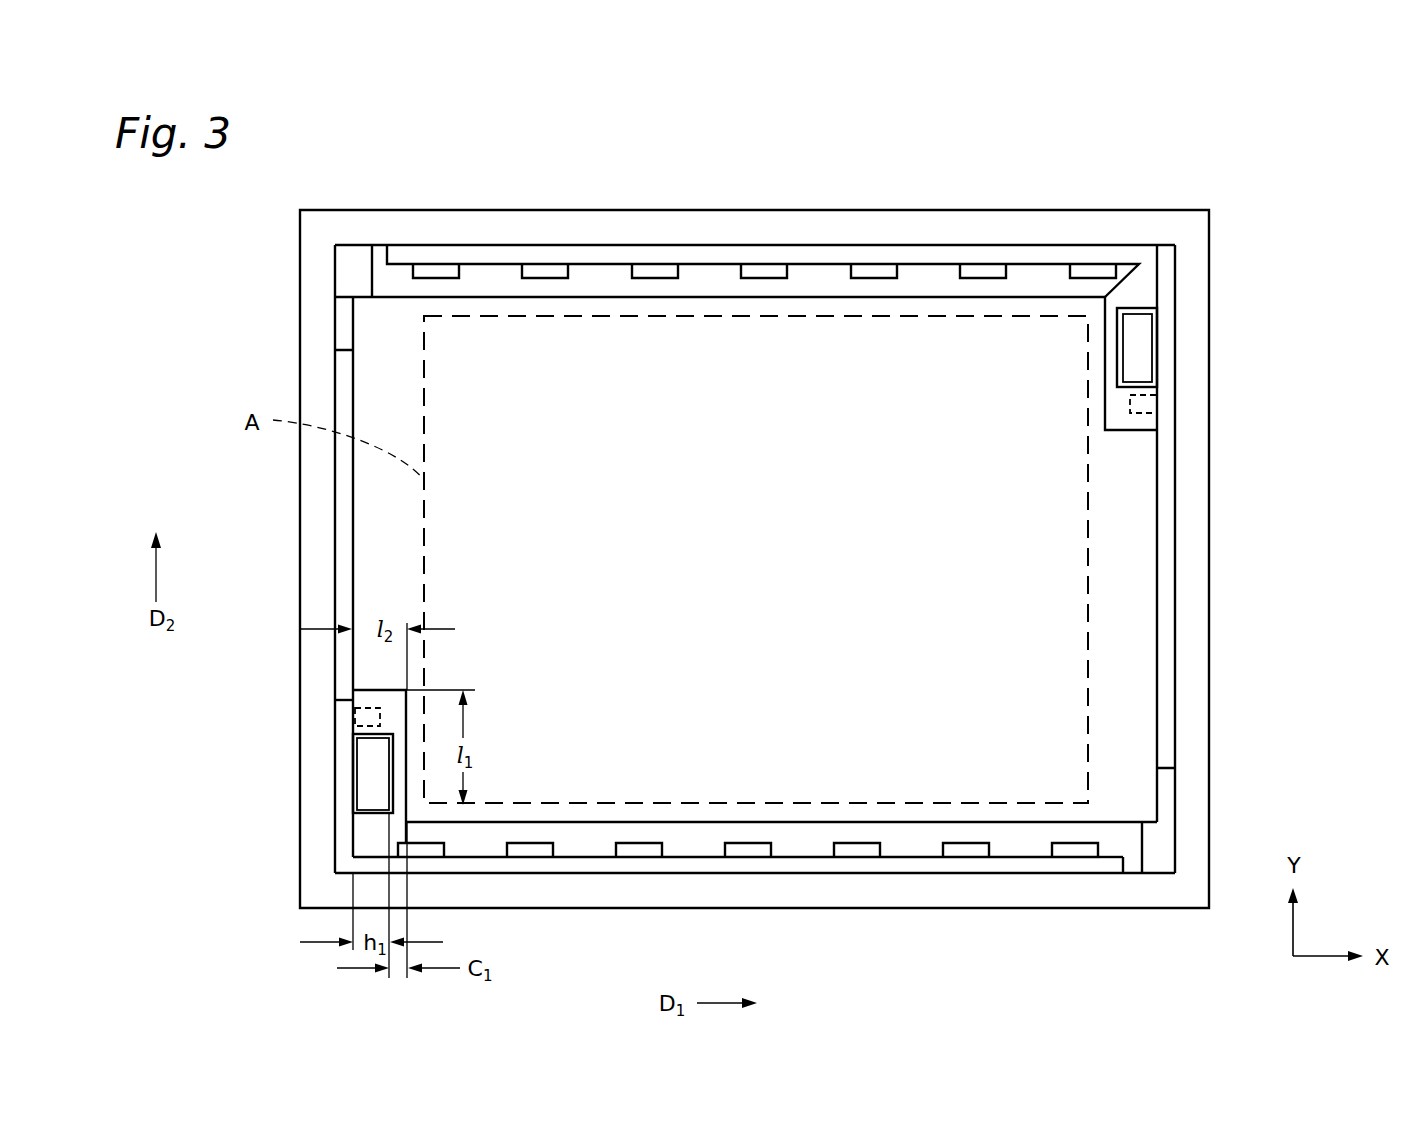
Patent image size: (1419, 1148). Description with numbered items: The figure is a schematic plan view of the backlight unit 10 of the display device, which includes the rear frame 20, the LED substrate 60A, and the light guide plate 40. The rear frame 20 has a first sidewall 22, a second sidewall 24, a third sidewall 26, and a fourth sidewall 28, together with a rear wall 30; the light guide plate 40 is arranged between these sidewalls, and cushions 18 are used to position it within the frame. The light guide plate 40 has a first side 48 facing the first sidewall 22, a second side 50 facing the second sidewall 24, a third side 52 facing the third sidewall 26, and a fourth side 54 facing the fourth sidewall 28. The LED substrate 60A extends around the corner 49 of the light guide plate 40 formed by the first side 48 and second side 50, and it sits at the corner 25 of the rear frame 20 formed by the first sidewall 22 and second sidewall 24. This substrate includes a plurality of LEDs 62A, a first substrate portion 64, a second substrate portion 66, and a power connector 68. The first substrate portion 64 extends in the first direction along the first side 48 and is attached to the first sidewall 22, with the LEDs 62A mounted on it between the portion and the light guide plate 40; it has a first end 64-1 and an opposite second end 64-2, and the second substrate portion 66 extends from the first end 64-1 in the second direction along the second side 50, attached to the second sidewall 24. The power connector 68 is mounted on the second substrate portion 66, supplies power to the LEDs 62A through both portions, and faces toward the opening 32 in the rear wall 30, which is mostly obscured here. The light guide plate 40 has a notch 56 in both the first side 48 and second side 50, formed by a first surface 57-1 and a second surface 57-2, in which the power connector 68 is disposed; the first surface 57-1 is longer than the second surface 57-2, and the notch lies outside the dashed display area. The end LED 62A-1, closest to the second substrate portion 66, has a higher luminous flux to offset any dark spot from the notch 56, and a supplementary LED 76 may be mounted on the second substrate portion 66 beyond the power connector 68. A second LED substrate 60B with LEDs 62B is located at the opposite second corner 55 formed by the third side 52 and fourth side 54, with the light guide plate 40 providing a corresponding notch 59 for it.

The backlight unit 10 is at (367, 178).
The cushions 18 is at (340, 315).
The rear frame 20 is at (930, 215).
The first sidewall 22 is at (828, 898).
The second sidewall 24 is at (317, 590).
The corner of the rear frame 25 is at (303, 908).
The third sidewall 26 is at (700, 225).
The fourth sidewall 28 is at (1195, 563).
The rear wall 30 is at (498, 282).
The opening 32 is at (345, 820).
The light guide plate 40 is at (1140, 673).
The first side 48 is at (1023, 823).
The corner of the light guide plate 49 is at (407, 823).
The second side 50 is at (352, 537).
The third side 52 is at (808, 298).
The fourth side 54 is at (1160, 625).
The second corner 55 is at (1105, 298).
The notch 56 is at (290, 773).
The first surface 57-1 is at (389, 752).
The second surface 57-2 is at (392, 735).
The notch 59 is at (1130, 418).
The LED substrate 60A is at (368, 855).
The second LED substrate 60B is at (1140, 267).
The LEDs 62A is at (790, 913).
The end LED 62A-1 is at (445, 855).
The LEDs 62B is at (652, 270).
The first substrate portion 64 is at (712, 913).
The first end 64-1 is at (368, 866).
The second end 64-2 is at (1112, 867).
The second substrate portion 66 is at (345, 720).
The power connector 68 is at (367, 797).
The supplementary LED 76 is at (363, 706).